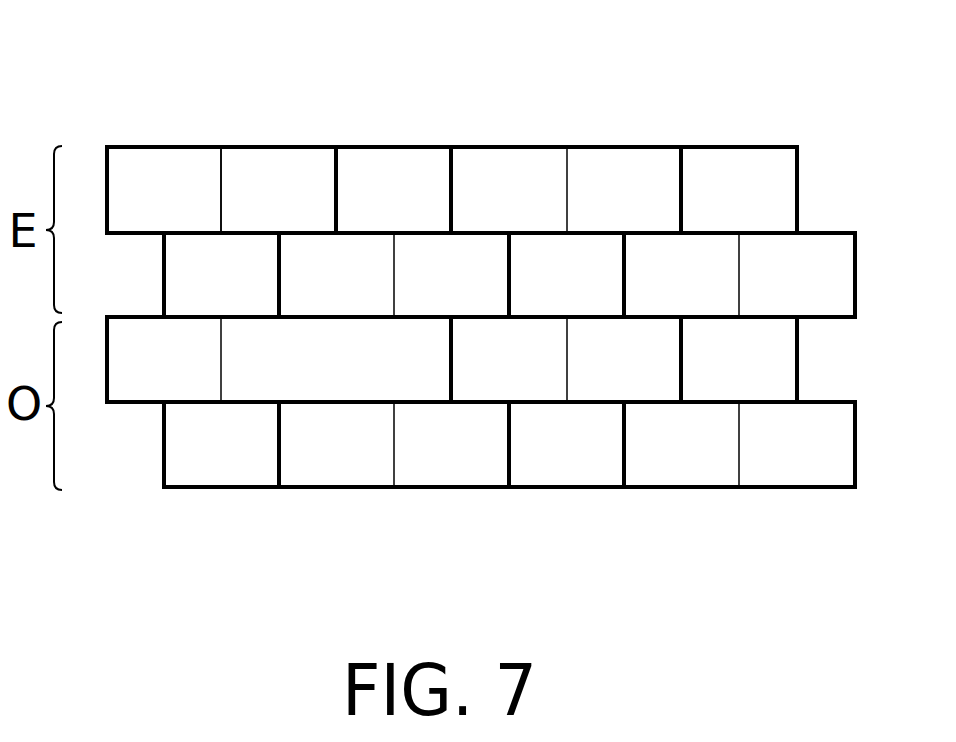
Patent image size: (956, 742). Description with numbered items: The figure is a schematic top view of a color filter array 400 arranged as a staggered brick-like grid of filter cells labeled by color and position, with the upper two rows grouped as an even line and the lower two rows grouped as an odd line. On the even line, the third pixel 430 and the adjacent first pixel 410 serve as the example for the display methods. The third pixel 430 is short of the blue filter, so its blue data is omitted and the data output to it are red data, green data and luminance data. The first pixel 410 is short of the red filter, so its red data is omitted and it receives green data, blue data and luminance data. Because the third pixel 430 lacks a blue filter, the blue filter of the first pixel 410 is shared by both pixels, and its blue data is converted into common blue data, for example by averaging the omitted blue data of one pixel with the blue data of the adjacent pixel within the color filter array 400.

The color filter array 400 is at (880, 567).
The first pixel 410 is at (397, 147).
The third pixel 430 is at (163, 147).